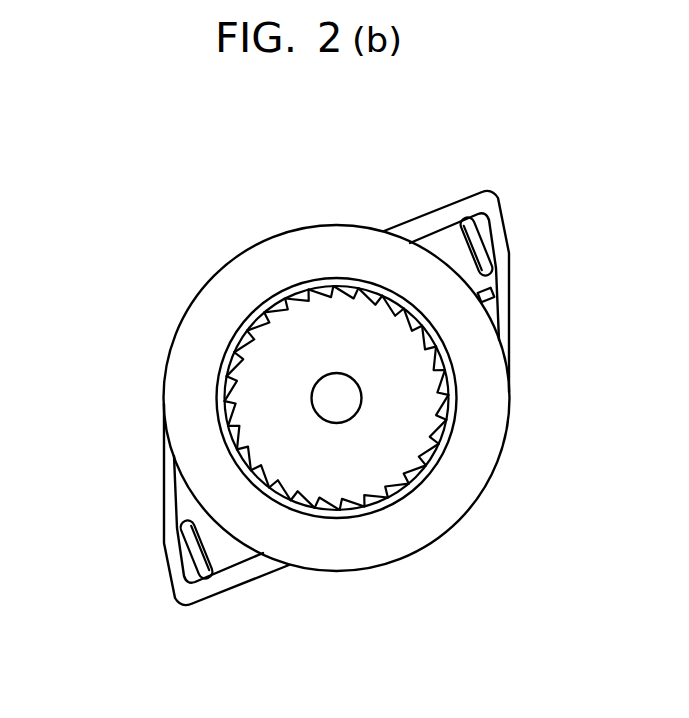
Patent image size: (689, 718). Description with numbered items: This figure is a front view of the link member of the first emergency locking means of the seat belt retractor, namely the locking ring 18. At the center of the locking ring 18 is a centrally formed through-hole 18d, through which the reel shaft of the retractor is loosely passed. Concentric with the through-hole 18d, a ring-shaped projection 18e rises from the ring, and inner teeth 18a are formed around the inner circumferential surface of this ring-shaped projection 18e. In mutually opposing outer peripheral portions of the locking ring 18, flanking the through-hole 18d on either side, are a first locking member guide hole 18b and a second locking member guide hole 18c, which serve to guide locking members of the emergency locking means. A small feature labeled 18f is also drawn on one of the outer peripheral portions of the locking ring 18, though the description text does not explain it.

The locking ring 18 is at (153, 438).
The inner teeth 18a is at (223, 381).
The first locking member guide hole 18b is at (215, 568).
The second locking member guide hole 18c is at (473, 252).
The through-hole 18d is at (326, 393).
The ring-shaped projection 18e is at (237, 327).
The projection 18f is at (482, 297).